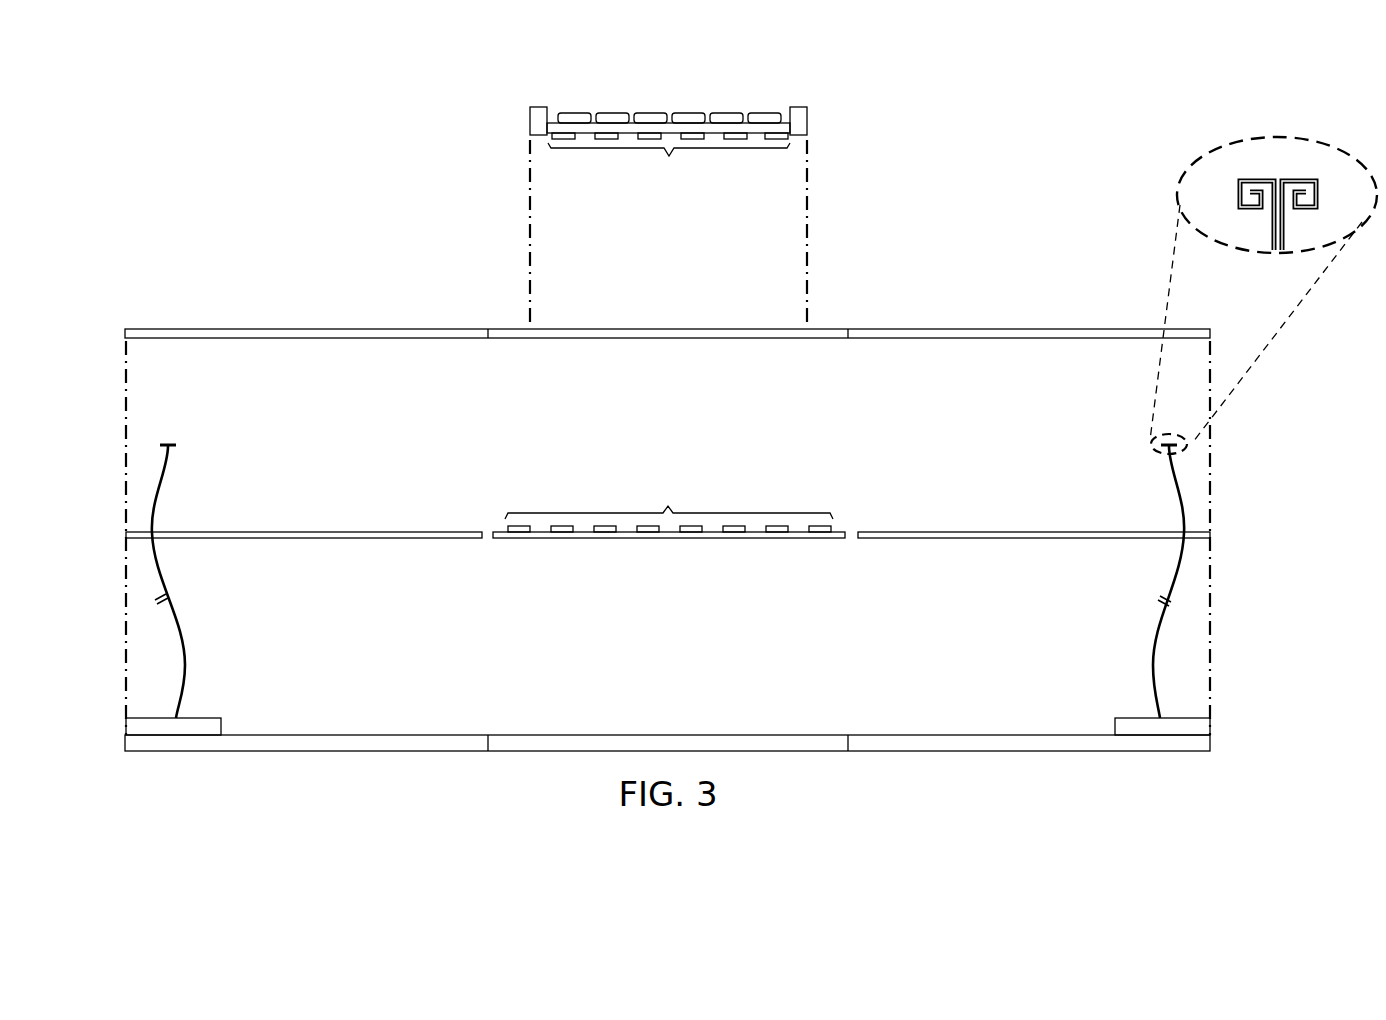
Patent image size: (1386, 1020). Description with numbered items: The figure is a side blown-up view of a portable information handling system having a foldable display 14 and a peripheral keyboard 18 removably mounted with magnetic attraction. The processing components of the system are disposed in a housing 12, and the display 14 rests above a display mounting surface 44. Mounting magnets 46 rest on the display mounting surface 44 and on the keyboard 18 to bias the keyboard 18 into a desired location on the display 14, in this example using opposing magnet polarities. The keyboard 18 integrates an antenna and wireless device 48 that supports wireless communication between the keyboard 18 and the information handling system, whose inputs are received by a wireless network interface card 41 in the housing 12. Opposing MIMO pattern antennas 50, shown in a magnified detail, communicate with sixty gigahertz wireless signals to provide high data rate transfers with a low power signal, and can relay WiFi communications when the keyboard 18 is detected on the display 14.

The housing 12 is at (431, 753).
The display 14 is at (425, 328).
The keyboard 18 is at (690, 113).
The wireless network interface card 41 is at (1126, 718).
The display mounting surface 44 is at (303, 539).
The mounting magnets 46 is at (669, 332).
The antenna and wireless device 48 is at (1162, 449).
The MIMO pattern antenna 50 is at (1276, 137).